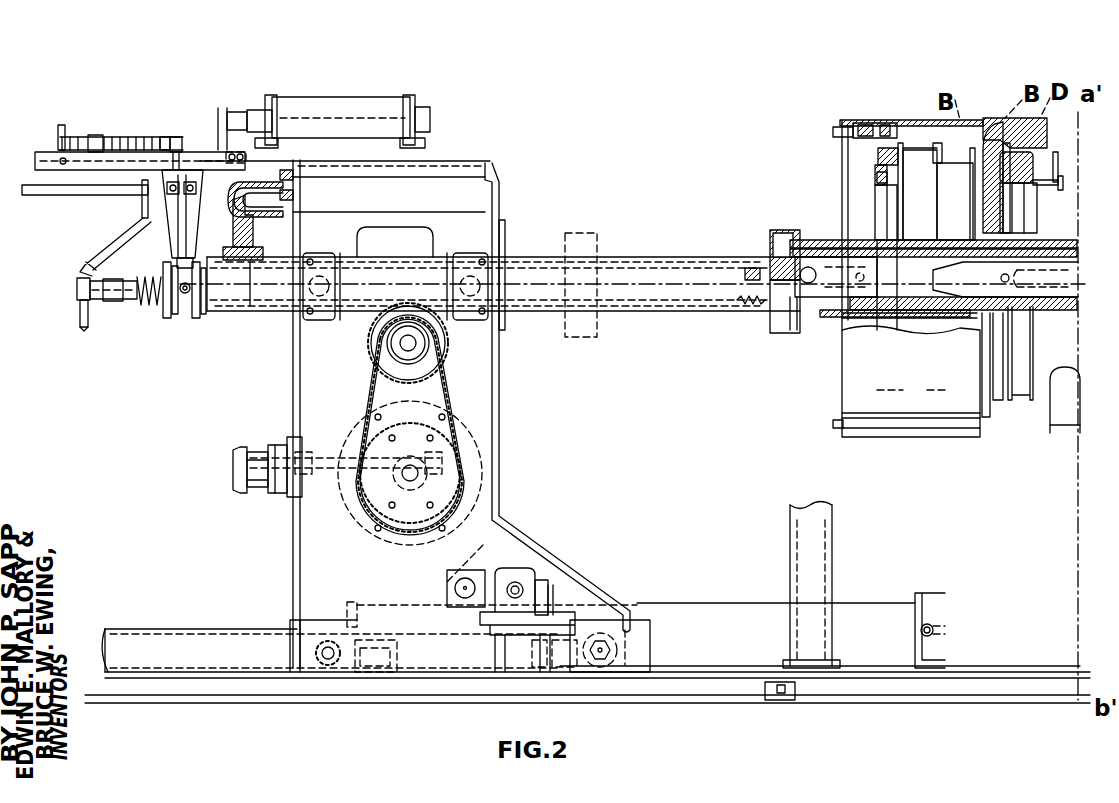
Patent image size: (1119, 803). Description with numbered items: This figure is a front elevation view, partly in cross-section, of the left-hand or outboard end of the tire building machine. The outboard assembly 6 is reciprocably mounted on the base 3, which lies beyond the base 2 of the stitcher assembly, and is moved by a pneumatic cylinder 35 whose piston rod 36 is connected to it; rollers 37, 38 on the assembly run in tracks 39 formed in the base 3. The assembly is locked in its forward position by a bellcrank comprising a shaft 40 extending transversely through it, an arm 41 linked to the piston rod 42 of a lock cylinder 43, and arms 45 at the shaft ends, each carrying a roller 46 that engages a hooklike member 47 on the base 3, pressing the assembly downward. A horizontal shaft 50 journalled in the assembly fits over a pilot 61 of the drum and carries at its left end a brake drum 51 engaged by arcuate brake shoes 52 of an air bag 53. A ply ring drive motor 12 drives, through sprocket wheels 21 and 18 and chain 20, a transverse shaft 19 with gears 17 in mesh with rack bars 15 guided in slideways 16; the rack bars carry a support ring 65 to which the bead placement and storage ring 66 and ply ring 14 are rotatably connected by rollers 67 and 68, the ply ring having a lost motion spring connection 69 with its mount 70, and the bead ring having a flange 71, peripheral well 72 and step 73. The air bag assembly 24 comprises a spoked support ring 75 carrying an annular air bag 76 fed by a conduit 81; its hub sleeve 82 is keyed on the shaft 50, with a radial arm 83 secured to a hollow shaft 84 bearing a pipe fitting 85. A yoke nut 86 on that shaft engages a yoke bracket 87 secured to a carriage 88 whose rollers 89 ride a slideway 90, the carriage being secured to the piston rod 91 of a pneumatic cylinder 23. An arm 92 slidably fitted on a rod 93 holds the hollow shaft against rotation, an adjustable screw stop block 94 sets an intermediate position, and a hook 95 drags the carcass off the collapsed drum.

The base 2 is at (985, 688).
The base 3 is at (712, 703).
The outboard assembly 6 is at (497, 464).
The ply ring drive motor 12 is at (470, 435).
The ply ring 14 is at (880, 120).
The rack bars 15 is at (740, 306).
The slideways 16 is at (318, 253).
The gears 17 is at (385, 386).
The sprocket wheel 18 is at (430, 360).
The transverse shaft 19 is at (405, 343).
The chain 20 is at (372, 400).
The sprocket wheel 21 is at (380, 490).
The pneumatic cylinder 23 is at (335, 102).
The air bag assembly 24 is at (1071, 187).
The pneumatic cylinder 35 is at (672, 604).
The piston rod 36 is at (343, 625).
The roller 37 is at (330, 668).
The roller 38 is at (640, 650).
The tracks 39 is at (216, 628).
The shaft 40 is at (450, 590).
The arm 41 is at (440, 562).
The piston rod 42 is at (312, 458).
The lock cylinder 43 is at (260, 494).
The arms 45 is at (494, 572).
The roller 46 is at (540, 582).
The hooklike member 47 is at (552, 592).
The shaft 50 is at (615, 256).
The brake drum 51 is at (233, 228).
The brake shoes 52 is at (237, 192).
The air bag 53 is at (273, 199).
The pilot 61 is at (945, 280).
The support ring 65 is at (875, 192).
The bead placement and storage ring 66 is at (938, 185).
The rollers 67 is at (878, 164).
The rollers 68 is at (877, 176).
The lost motion spring connection 69 is at (835, 131).
The mount 70 is at (925, 140).
The flange 71 is at (936, 163).
The peripheral well 72 is at (983, 122).
The step 73 is at (1000, 120).
The spoked support ring 75 is at (1035, 205).
The air bag 76 is at (1030, 160).
The air supply and exhaust conduit 81 is at (920, 248).
The hub sleeve 82 is at (843, 255).
The radial arm 83 is at (770, 237).
The hollow shaft 84 is at (752, 268).
The pipe fitting 85 is at (75, 290).
The yoke nut 86 is at (168, 318).
The yoke bracket 87 is at (174, 218).
The carriage 88 is at (212, 150).
The rollers 89 is at (162, 138).
The slideway 90 is at (42, 152).
The piston rod 91 is at (240, 112).
The arm 92 is at (118, 235).
The rod 93 is at (47, 194).
The adjustable screw stop block 94 is at (175, 137).
The hook 95 is at (1058, 155).